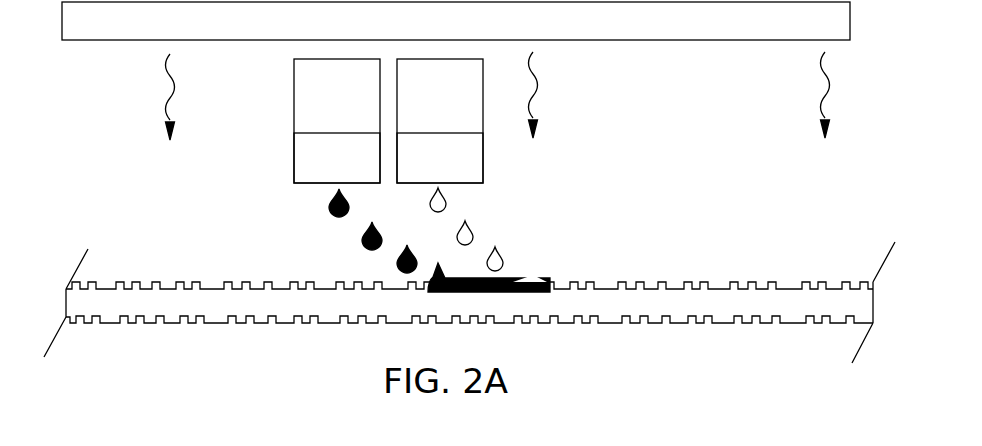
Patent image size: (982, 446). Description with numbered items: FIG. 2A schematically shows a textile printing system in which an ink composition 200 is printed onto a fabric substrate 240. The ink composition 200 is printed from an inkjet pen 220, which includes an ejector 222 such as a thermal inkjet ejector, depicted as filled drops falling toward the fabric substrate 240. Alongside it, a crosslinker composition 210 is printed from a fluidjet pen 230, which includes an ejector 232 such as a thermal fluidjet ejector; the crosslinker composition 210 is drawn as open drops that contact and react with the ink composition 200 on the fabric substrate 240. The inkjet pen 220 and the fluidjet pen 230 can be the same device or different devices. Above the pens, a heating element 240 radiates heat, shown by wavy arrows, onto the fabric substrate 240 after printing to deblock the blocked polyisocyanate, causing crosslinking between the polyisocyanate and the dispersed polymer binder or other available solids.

The ink composition 200 is at (331, 207).
The crosslinker composition 210 is at (472, 236).
The inkjet pen 220 is at (316, 107).
The ejector 222 is at (316, 170).
The fluidjet pen 230 is at (419, 107).
The ejector 232 is at (419, 170).
The fabric substrate / heating element 240 is at (434, 32).